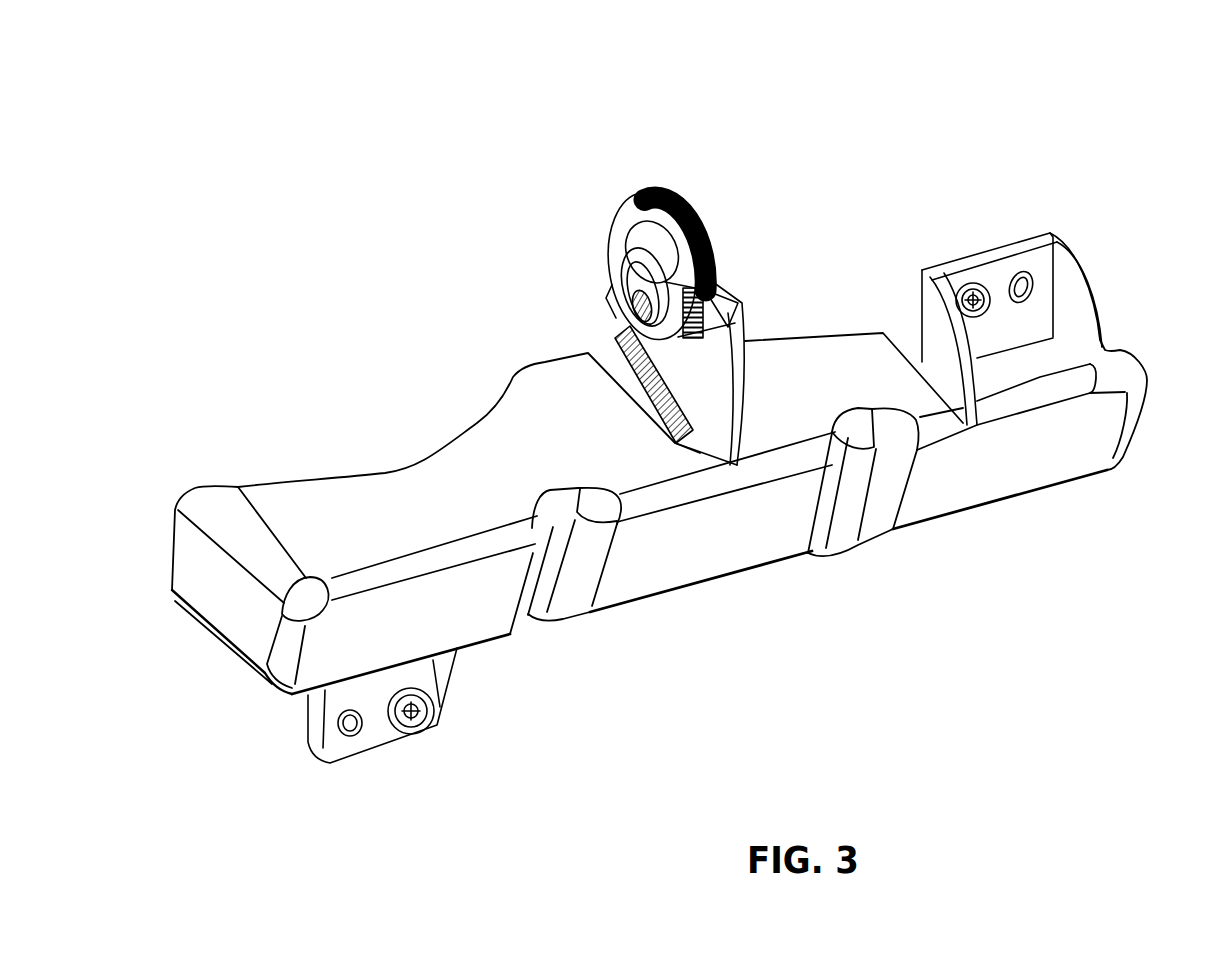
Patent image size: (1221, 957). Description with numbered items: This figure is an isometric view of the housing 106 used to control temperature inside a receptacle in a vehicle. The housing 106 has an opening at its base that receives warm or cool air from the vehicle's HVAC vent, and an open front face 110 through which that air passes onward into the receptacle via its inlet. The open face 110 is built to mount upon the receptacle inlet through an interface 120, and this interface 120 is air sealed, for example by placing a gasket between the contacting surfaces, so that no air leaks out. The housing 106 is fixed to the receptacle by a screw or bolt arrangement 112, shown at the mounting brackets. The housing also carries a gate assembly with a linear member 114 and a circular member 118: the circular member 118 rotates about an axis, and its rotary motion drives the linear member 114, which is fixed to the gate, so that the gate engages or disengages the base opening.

The housing 106 is at (1075, 85).
The open front face 110 is at (486, 299).
The screw or bolt arrangement 112 is at (975, 292).
The linear member 114 is at (685, 378).
The circular member 118 is at (655, 192).
The interface 120 is at (408, 465).